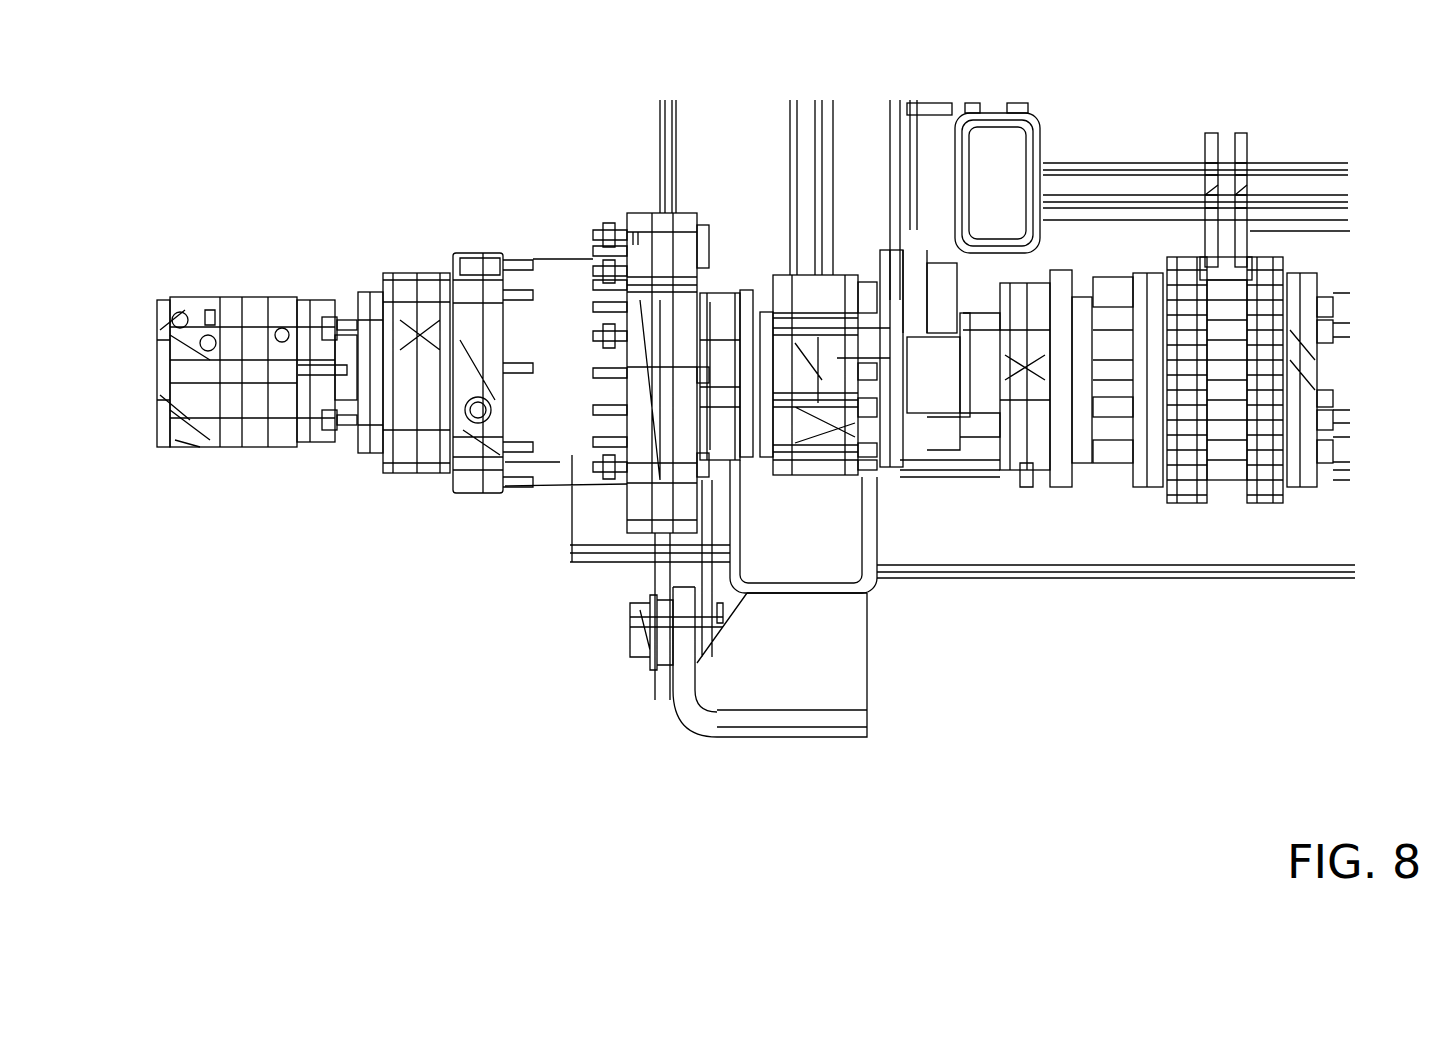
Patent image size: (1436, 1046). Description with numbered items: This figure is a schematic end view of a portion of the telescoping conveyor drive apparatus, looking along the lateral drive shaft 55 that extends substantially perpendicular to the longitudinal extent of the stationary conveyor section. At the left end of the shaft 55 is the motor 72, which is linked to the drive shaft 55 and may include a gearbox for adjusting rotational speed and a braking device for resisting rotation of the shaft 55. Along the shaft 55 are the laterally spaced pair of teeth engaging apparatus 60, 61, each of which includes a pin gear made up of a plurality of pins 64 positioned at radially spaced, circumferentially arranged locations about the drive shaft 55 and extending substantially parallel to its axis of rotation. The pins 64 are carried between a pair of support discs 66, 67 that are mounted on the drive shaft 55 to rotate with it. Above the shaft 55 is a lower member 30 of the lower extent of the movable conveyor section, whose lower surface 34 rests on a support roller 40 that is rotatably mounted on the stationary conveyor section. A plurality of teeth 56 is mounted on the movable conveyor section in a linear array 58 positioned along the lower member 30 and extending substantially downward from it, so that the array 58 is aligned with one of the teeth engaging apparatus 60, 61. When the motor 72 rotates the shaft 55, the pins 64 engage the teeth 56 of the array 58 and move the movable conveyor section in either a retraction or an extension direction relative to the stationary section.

The lower member 30 is at (1040, 117).
The lower surface 34 is at (1022, 275).
The support roller 40 is at (977, 282).
The drive shaft 55 is at (938, 385).
The teeth 56 is at (1220, 273).
The array of teeth 58 is at (1233, 243).
The teeth engaging apparatus 60 is at (1112, 507).
The teeth engaging apparatus 61 is at (1317, 383).
The pins 64 is at (1220, 497).
The support disc 66 is at (1157, 480).
The support disc 67 is at (1300, 480).
The motor 72 is at (408, 478).